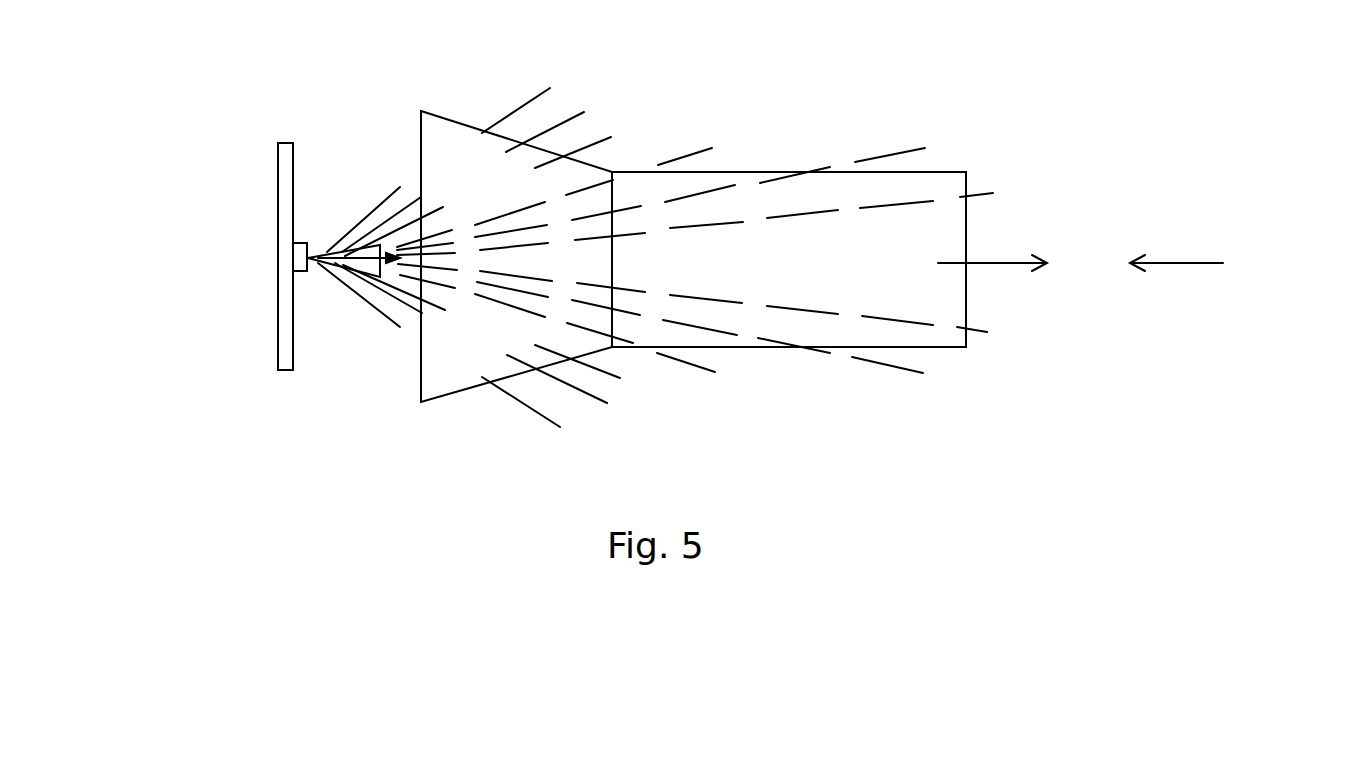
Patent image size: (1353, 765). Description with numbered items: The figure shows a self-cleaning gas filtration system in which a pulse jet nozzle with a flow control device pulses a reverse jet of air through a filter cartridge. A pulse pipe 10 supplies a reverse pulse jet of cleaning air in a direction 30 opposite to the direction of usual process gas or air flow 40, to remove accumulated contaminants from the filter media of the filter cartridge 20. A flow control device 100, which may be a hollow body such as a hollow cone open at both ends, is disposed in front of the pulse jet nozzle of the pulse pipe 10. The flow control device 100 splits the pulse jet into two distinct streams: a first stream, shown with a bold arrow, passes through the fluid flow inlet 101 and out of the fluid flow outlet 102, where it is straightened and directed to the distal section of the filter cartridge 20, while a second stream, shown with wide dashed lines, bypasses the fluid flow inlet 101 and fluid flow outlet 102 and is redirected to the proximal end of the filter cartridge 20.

The pulse pipe 10 is at (285, 178).
The flow control device 100 is at (339, 293).
The fluid flow inlet 101 is at (335, 265).
The fluid flow outlet 102 is at (382, 278).
The filter cartridge 20 is at (712, 173).
The direction of reverse pulse jet 30 is at (1008, 262).
The direction of usual process gas or air flow 40 is at (1163, 262).